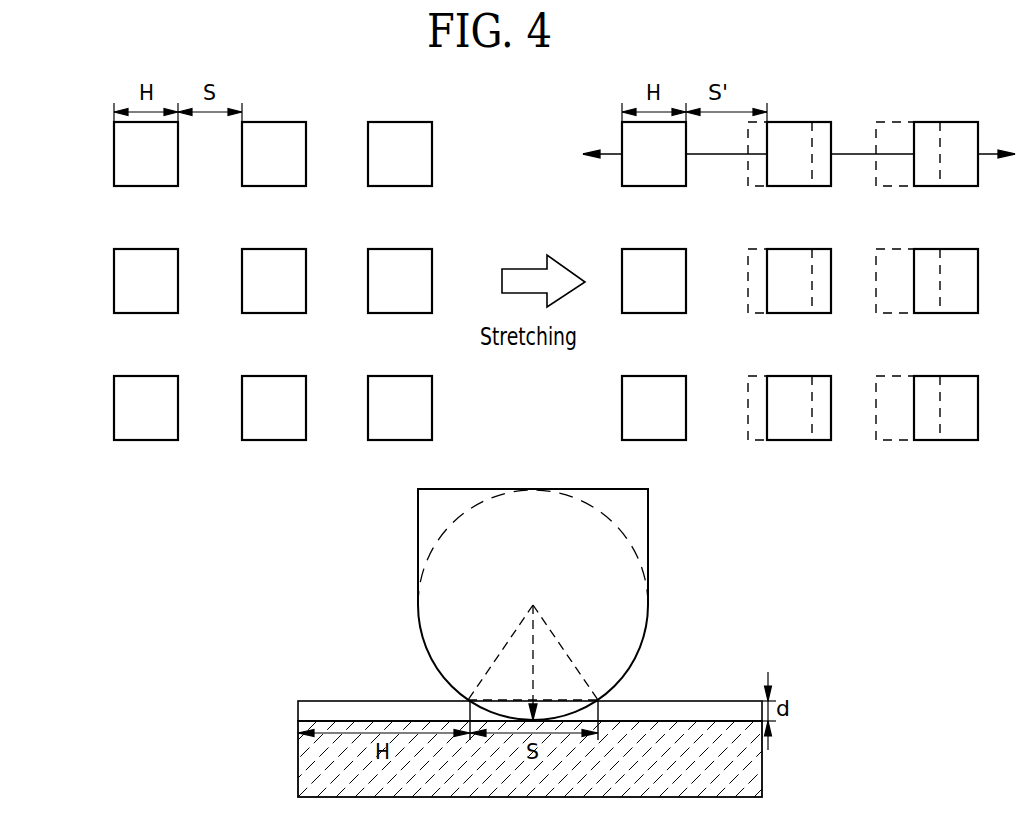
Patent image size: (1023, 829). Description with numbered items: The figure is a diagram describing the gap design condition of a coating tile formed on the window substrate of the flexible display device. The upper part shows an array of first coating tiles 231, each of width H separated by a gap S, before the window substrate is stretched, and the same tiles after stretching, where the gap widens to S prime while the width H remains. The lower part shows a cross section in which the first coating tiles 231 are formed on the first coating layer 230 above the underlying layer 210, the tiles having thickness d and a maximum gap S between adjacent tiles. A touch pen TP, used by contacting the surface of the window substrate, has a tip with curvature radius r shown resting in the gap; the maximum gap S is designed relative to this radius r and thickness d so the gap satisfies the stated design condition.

The first coating tile 231 is at (132, 152).
The first coating layer 230 is at (298, 708).
The stretchable substrate 210 is at (298, 751).
The touch pen TP is at (649, 520).